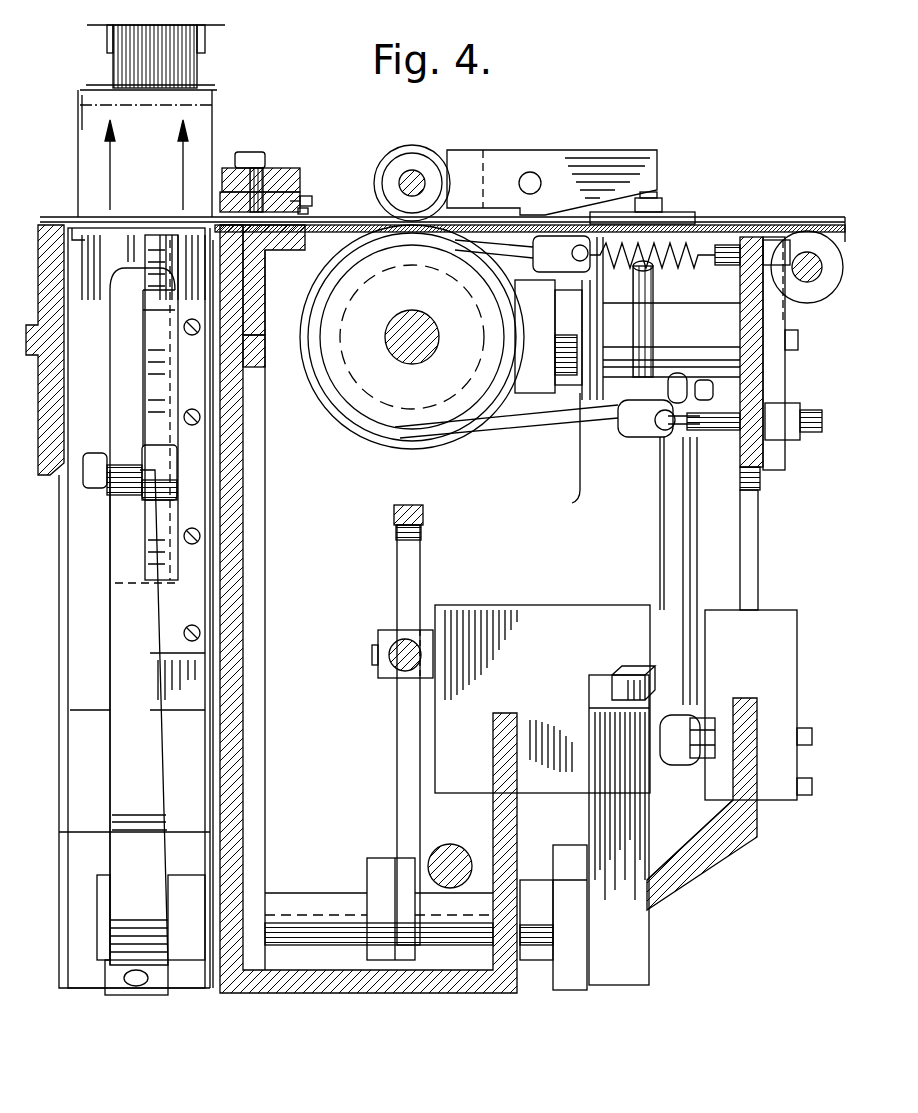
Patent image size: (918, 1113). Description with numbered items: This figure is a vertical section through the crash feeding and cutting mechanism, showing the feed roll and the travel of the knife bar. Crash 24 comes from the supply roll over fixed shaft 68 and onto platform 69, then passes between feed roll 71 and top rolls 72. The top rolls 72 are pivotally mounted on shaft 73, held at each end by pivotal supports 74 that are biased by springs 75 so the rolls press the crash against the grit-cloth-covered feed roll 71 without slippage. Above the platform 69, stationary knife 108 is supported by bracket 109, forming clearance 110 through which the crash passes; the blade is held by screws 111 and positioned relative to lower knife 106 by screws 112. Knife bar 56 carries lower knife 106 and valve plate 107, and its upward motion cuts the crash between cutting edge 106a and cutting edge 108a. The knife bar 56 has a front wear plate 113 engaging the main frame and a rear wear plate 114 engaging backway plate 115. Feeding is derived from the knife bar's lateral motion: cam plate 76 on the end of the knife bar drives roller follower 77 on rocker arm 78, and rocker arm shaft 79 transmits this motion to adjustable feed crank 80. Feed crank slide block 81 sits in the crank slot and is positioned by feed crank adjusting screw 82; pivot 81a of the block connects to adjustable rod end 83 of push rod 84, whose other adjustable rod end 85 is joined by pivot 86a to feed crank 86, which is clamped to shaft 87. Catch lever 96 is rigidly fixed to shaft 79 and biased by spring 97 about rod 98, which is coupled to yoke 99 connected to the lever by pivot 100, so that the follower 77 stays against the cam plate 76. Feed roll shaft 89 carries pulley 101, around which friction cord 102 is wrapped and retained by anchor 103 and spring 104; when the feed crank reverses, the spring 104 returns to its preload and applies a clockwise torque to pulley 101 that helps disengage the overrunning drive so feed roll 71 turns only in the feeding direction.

The crash 24 is at (146, 221).
The knife bar 56 is at (142, 262).
The fixed shaft 68 is at (830, 280).
The platform 69 is at (700, 236).
The feed roll 71 is at (352, 432).
The top rolls 72 is at (382, 183).
The shaft 73 is at (420, 175).
The pivotal supports 74 is at (505, 168).
The springs 75 is at (650, 198).
The cam plate 76 is at (146, 338).
The roller follower 77 is at (158, 500).
The rocker arm 78 is at (138, 686).
The rocker arm shaft 79 is at (302, 893).
The adjustable feed crank 80 is at (635, 945).
The feed crank slide block 81 is at (660, 764).
The pivot 81a is at (707, 758).
The feed crank adjusting screw 82 is at (620, 666).
The adjustable rod end 83 is at (684, 718).
The push rod 84 is at (660, 533).
The adjustable rod end 85 is at (680, 378).
The feed crank 86 is at (640, 383).
The pivot 86a is at (706, 398).
The shaft 87 is at (682, 326).
The feed roll shaft 89 is at (434, 345).
The catch lever 96 is at (422, 546).
The spring 97 is at (392, 678).
The rod 98 is at (392, 660).
The yoke 99 is at (428, 630).
The pivot 100 is at (377, 650).
The pulley 101 is at (460, 432).
The friction cord 102 is at (538, 424).
The anchor 103 is at (716, 432).
The spring 104 is at (677, 266).
The lower knife 106 is at (93, 230).
The cutting edge 106a is at (219, 248).
The valve plate 107 is at (77, 235).
The stationary knife 108 is at (244, 195).
The cutting edge 108a is at (220, 204).
The bracket 109 is at (292, 170).
The clearance 110 is at (308, 212).
The screws 111 is at (268, 152).
The screws 112 is at (308, 196).
The front wear plate 113 is at (262, 296).
The rear wear plate 114 is at (82, 240).
The backway plate 115 is at (42, 250).